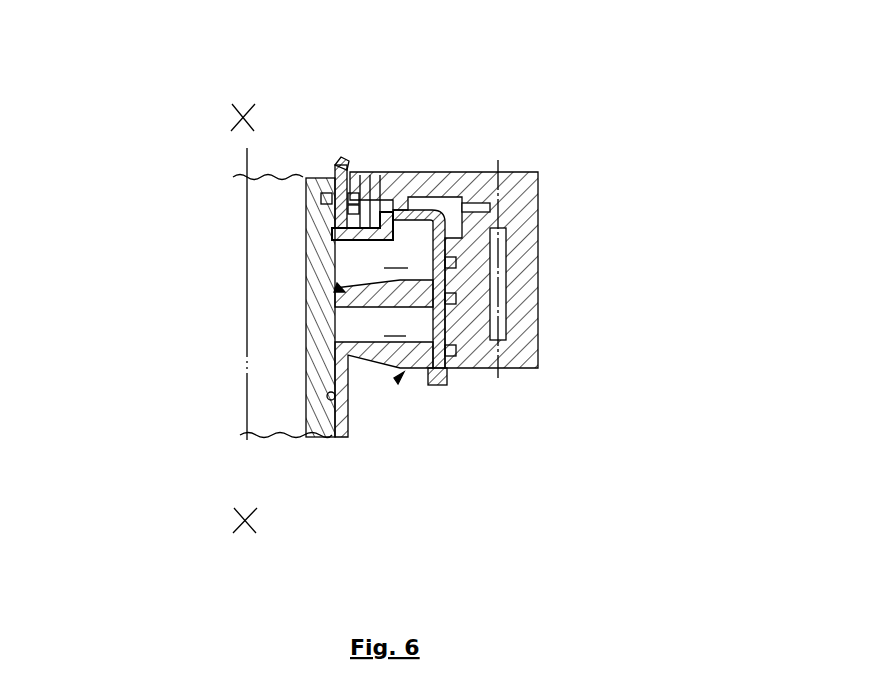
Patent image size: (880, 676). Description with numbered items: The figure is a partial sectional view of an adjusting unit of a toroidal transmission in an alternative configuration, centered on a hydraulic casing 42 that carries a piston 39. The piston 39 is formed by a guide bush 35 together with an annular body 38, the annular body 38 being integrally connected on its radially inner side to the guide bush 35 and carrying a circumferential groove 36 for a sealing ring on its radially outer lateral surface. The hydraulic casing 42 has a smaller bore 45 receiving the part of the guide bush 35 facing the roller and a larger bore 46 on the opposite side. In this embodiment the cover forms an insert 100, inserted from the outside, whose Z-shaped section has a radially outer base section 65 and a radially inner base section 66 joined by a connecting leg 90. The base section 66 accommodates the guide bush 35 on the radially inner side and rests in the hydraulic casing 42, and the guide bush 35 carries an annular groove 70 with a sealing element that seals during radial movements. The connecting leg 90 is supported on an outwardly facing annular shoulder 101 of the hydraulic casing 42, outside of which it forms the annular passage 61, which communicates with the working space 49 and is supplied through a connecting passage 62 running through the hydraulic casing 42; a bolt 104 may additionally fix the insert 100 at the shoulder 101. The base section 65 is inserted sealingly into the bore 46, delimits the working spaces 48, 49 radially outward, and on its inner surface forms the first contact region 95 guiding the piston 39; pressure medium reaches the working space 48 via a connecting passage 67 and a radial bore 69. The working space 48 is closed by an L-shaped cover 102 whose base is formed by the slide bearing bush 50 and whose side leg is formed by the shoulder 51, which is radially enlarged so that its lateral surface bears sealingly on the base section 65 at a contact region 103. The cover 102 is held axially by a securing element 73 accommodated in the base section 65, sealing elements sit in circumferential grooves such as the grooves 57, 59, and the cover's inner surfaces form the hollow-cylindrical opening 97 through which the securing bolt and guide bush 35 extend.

The guide bush 35 is at (335, 305).
The circumferential groove 36 is at (333, 352).
The annular body 38 is at (306, 248).
The piston 39 is at (337, 288).
The hydraulic casing 42 is at (538, 233).
The bore 45 is at (349, 158).
The bore 46 is at (462, 372).
The working space 48 is at (395, 326).
The working space 49 is at (396, 258).
The slide bearing bush 50 is at (357, 438).
The shoulder 51 is at (385, 362).
The circumferential groove 57 is at (352, 193).
The circumferential groove 59 is at (306, 186).
The annular passage 61 is at (445, 172).
The connecting passage 62 is at (470, 172).
The base section 65 is at (538, 188).
The base section 66 is at (333, 178).
The connecting passage 67 is at (538, 303).
The radial bore 69 is at (538, 276).
The annular groove 70 is at (328, 399).
The securing element 73 is at (412, 385).
The connecting leg 90 is at (375, 176).
The first contact region 95 is at (537, 350).
The opening 97 is at (307, 180).
The insert 100 is at (310, 222).
The annular shoulder 101 is at (366, 228).
The cover 102 is at (400, 380).
The contact region 103 is at (443, 386).
The bolt 104 is at (306, 237).